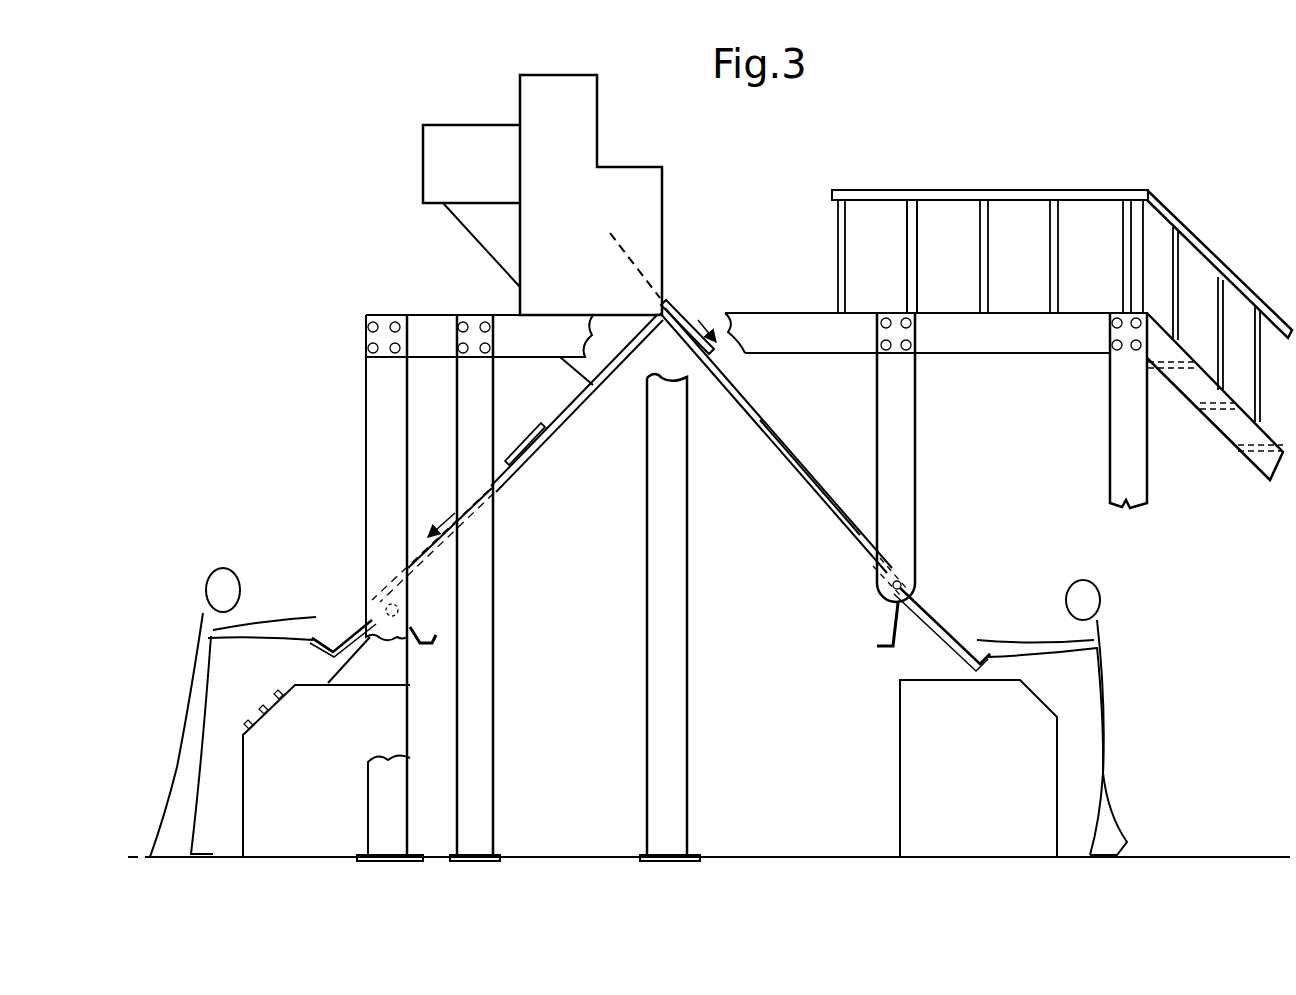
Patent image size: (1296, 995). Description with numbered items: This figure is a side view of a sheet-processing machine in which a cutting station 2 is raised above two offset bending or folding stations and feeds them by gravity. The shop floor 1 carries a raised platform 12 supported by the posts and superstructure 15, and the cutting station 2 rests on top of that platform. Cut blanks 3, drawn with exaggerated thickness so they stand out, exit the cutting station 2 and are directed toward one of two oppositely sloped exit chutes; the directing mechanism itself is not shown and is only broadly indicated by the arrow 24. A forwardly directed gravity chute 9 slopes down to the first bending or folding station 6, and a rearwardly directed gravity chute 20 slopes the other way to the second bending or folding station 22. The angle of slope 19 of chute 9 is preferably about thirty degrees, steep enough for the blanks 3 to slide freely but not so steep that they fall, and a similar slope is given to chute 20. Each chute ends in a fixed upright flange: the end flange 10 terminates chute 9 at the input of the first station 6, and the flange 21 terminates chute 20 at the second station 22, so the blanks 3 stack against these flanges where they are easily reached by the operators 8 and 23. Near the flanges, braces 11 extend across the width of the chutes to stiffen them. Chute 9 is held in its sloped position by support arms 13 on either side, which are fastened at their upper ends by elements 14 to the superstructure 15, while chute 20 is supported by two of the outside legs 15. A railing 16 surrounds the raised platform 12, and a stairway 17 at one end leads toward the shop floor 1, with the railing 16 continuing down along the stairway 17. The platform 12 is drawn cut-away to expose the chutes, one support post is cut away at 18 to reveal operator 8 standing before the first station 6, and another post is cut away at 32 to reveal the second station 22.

The shop floor 1 is at (732, 855).
The cutting station 2 is at (630, 141).
The cut blanks 3 is at (670, 305).
The first bending or folding station 6 is at (896, 742).
The operator 8 is at (1107, 708).
The forwardly directed gravity chute 9 is at (800, 473).
The fixed upright end flange 10 is at (988, 662).
The braces 11 is at (420, 630).
The raised platform 12 is at (930, 313).
The support arms 13 is at (917, 450).
The attachment elements 14 is at (879, 347).
The posts and superstructure 15 is at (460, 391).
The railing 16 is at (903, 190).
The stairway 17 is at (1205, 420).
The cut-away portion of support post 18 is at (1113, 450).
The angle of slope 19 is at (817, 360).
The rearwardly directed gravity chute 20 is at (508, 468).
The fixed upright flange 21 is at (312, 651).
The second bending or folding station 22 is at (413, 723).
The operator 23 is at (191, 660).
The directing mechanism arrow 24 is at (678, 254).
The cut-away portion of support post 32 is at (405, 778).